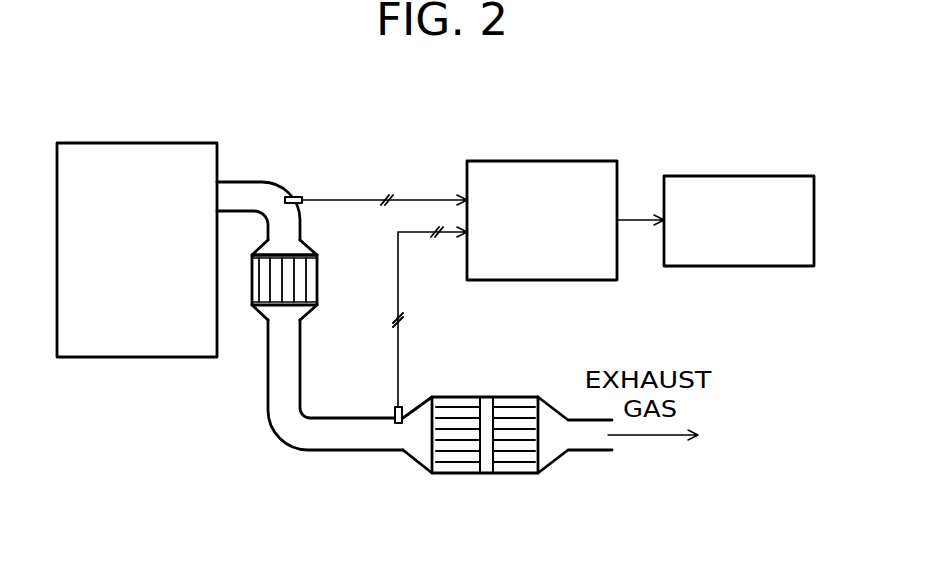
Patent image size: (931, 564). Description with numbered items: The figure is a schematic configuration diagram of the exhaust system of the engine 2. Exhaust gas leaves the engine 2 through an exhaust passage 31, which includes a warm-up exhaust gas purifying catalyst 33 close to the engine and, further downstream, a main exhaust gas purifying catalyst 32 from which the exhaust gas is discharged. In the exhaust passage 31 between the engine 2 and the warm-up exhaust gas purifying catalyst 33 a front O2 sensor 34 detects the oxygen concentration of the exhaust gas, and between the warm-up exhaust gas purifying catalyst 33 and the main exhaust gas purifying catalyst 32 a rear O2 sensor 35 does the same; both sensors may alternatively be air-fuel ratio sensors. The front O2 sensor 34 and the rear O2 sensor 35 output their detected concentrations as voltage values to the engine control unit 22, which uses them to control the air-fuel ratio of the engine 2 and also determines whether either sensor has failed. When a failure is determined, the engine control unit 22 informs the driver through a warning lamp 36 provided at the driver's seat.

The engine 2 is at (217, 143).
The engine control unit 22 is at (557, 161).
The exhaust passage 31 is at (301, 378).
The main exhaust gas purifying catalyst 32 is at (487, 396).
The warm-up exhaust gas purifying catalyst 33 is at (318, 270).
The front O2 sensor 34 is at (302, 196).
The rear O2 sensor 35 is at (403, 407).
The warning lamp 36 is at (753, 176).